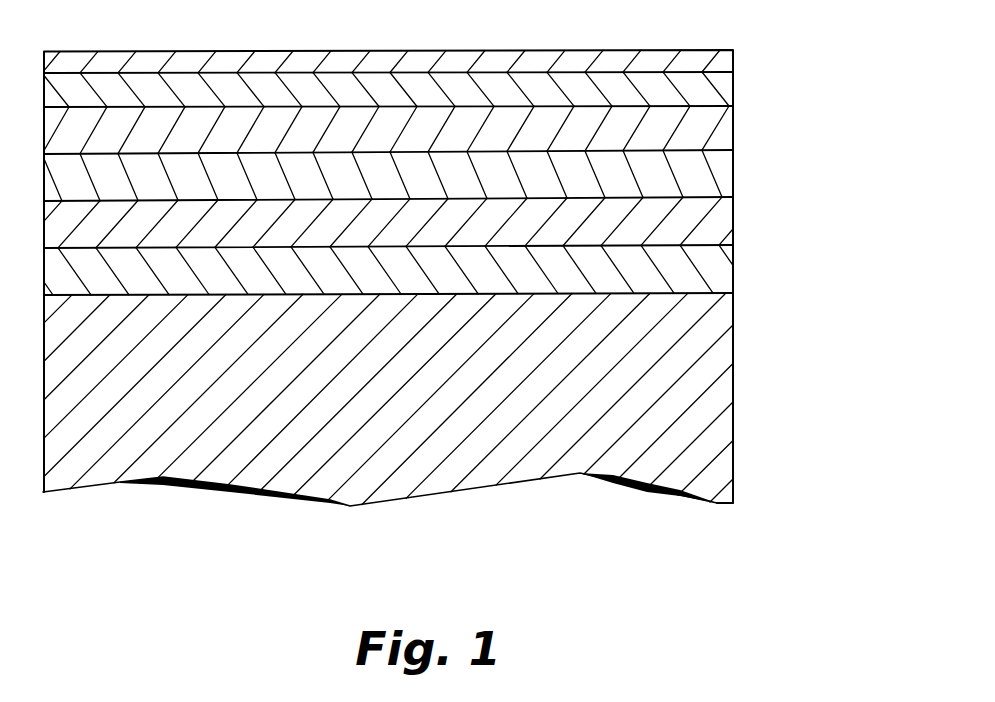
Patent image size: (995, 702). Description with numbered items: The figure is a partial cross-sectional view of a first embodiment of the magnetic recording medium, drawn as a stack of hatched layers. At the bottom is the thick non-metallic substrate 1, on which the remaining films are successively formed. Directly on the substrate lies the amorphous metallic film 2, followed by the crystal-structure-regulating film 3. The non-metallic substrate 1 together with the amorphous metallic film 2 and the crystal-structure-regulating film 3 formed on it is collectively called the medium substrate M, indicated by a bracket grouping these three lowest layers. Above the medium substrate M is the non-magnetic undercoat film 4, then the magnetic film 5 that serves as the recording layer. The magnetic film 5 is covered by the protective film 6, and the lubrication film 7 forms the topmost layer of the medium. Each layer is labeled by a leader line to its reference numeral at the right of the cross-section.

The non-metallic substrate 1 is at (452, 399).
The amorphous metallic film 2 is at (733, 263).
The crystal-structure-regulating film 3 is at (733, 218).
The non-magnetic undercoat film 4 is at (733, 172).
The magnetic film 5 is at (733, 120).
The protective film 6 is at (733, 80).
The lubrication film 7 is at (733, 50).
The medium substrate M is at (483, 351).